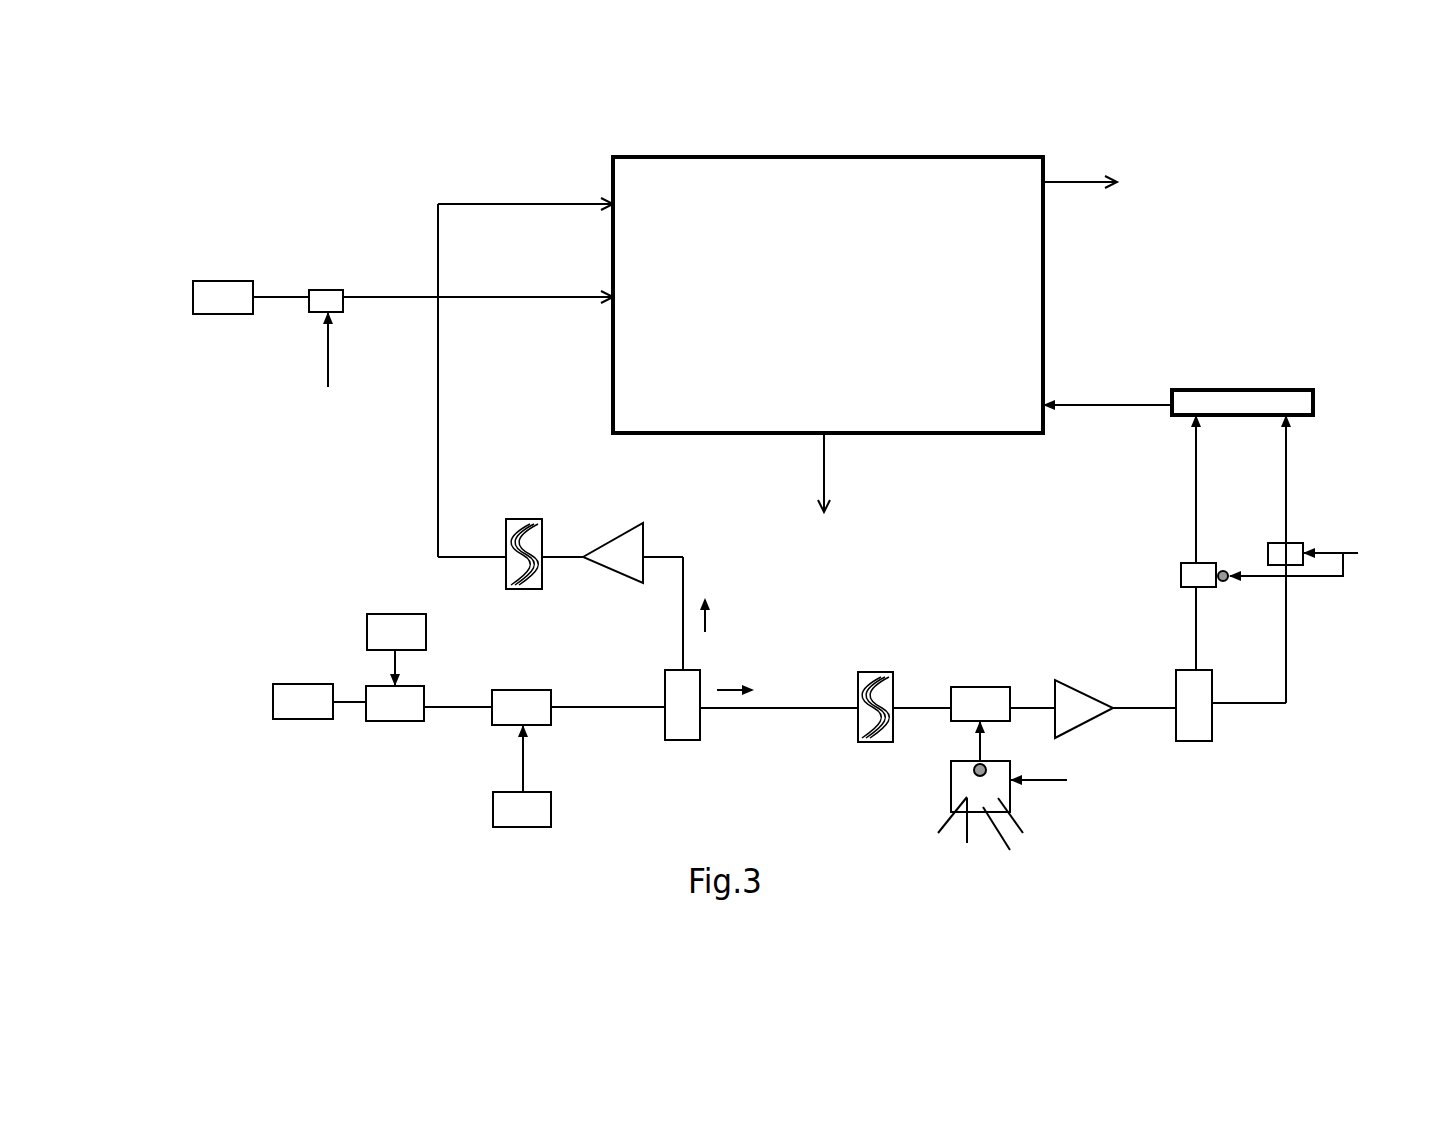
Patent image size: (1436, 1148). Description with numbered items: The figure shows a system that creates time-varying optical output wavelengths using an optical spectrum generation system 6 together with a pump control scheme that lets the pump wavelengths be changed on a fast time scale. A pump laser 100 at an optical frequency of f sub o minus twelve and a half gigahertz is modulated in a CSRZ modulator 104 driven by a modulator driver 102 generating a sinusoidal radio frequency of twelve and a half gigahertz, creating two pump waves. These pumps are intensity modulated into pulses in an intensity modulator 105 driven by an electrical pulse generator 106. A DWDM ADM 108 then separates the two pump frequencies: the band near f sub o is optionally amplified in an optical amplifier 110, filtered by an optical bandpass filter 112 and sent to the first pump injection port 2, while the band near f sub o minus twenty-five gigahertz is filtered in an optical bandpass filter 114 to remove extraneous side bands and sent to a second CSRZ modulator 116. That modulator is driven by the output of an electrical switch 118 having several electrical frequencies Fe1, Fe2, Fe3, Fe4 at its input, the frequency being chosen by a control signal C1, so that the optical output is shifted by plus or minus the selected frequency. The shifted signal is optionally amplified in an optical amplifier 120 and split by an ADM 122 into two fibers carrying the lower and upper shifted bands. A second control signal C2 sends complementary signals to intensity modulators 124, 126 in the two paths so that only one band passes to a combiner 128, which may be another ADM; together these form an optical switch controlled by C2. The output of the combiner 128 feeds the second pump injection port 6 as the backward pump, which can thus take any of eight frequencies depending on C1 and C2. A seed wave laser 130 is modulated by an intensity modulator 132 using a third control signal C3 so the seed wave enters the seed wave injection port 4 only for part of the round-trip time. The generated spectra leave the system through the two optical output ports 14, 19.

The first pump injection port 2 is at (525, 189).
The seed wave injection port 4 is at (478, 280).
The optical spectrum generation system 6 is at (892, 273).
The optical output port 14 is at (1080, 160).
The second output port 19 is at (806, 472).
The pump laser 100 is at (303, 682).
The modulator driver 102 is at (396, 631).
The CSRZ modulator 104 is at (395, 730).
The intensity modulator 105 is at (523, 687).
The electrical pulse generator 106 is at (519, 798).
The DWDM ADM 108 is at (678, 728).
The optical amplifier 110 is at (616, 536).
The optical bandpass filter 112 is at (528, 534).
The optical bandpass filter 114 is at (882, 687).
The second CSRZ modulator 116 is at (980, 682).
The electrical switch 118 is at (951, 766).
The optical amplifier 120 is at (1080, 690).
The ADM 122 is at (1202, 728).
The intensity modulator 124 is at (1261, 536).
The intensity modulator 126 is at (1165, 566).
The combiner 128 is at (1242, 383).
The seed wave laser 130 is at (251, 277).
The intensity modulator 132 is at (329, 281).
The control signal C1 is at (1063, 781).
The second control signal C2 is at (1293, 543).
The third control signal C3 is at (324, 370).
The electrical frequency Fe1 is at (929, 834).
The electrical frequency Fe2 is at (974, 849).
The electrical frequency Fe3 is at (1020, 854).
The electrical frequency Fe4 is at (1042, 837).